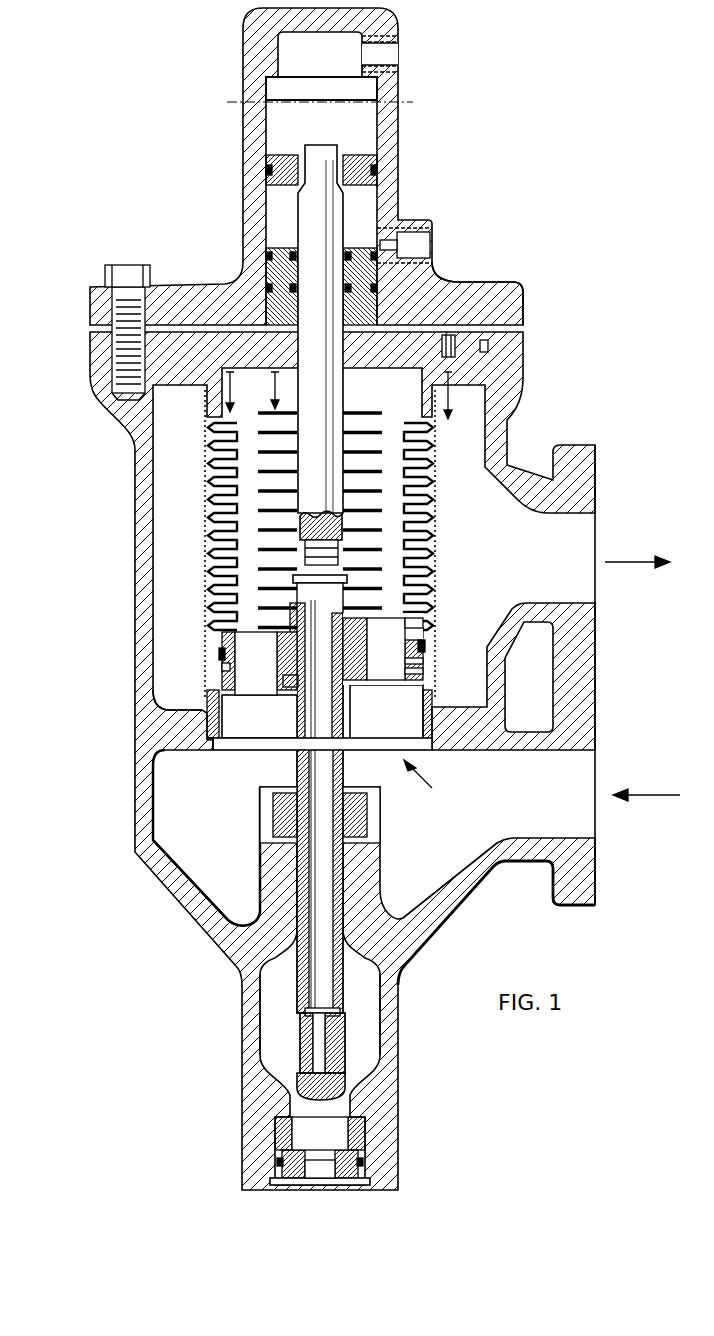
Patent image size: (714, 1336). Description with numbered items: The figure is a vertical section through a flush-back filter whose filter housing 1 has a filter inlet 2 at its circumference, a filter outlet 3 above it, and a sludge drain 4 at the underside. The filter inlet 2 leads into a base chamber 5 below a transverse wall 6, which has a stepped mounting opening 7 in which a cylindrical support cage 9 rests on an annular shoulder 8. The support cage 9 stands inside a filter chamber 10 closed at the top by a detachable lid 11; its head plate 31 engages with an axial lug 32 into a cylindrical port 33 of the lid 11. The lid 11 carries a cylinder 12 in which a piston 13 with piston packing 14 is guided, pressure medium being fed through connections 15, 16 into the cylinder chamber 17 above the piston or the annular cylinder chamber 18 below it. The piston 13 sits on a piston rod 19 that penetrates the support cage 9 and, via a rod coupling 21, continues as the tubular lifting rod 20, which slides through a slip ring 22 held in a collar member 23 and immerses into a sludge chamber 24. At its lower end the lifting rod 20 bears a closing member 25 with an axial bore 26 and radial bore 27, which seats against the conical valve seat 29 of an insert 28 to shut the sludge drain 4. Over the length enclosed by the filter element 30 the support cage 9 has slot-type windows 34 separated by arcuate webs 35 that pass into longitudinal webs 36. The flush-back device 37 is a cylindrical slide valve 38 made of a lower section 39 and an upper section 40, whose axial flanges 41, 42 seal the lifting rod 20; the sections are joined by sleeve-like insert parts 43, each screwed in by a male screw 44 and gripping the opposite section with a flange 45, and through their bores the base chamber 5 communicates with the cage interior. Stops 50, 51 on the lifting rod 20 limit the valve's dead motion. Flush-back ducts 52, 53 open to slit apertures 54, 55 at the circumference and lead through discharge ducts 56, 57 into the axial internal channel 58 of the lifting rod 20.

The filter housing 1 is at (510, 385).
The filter inlet 2 is at (585, 858).
The filter outlet 3 is at (583, 534).
The sludge drain 4 is at (320, 1170).
The base chamber 5 is at (160, 845).
The transverse wall 6 is at (145, 720).
The stepped mounting opening 7 is at (235, 750).
The annular shoulder 8 is at (207, 745).
The support cage 9 is at (208, 695).
The filter chamber 10 is at (153, 548).
The lid 11 is at (90, 308).
The cylinder 12 is at (243, 136).
The piston 13 is at (266, 160).
The piston packing 14 is at (266, 172).
The connection 15 is at (398, 50).
The connection 16 is at (420, 238).
The cylinder chamber 17 is at (372, 126).
The annular cylinder chamber 18 is at (275, 207).
The piston rod 19 is at (320, 232).
The tubular lifting rod 20 is at (300, 888).
The rod coupling 21 is at (320, 530).
The slip ring 22 is at (275, 815).
The collar member 23 is at (265, 858).
The sludge chamber 24 is at (258, 1008).
The closing member 25 is at (300, 1050).
The axial bore 26 is at (340, 1045).
The radial bore 27 is at (300, 1085).
The insert 28 is at (278, 1148).
The conical valve seat 29 is at (360, 1135).
The filter element 30 is at (440, 522).
The head plate 31 is at (485, 338).
The axial lug 32 is at (367, 283).
The cylindrical port 33 is at (380, 305).
The slot-type windows 34 is at (214, 423).
The arcuate webs 35 is at (208, 436).
The longitudinal webs 36 is at (262, 505).
The flush-back device 37 is at (542, 785).
The slide valve 38 is at (425, 650).
The slide valve lower section 39 is at (430, 690).
The slide valve upper section 40 is at (420, 635).
The axial flange 41 is at (350, 702).
The axial flange 42 is at (386, 649).
The insert parts 43 is at (322, 686).
The male screw 44 is at (237, 643).
The flange 45 is at (280, 700).
The stop 50 is at (293, 715).
The stop 51 is at (347, 578).
The flush-back duct 52 is at (423, 660).
The flush-back duct 53 is at (230, 665).
The slit aperture 54 is at (425, 668).
The slit aperture 55 is at (222, 655).
The discharge duct 56 is at (330, 622).
The discharge duct 57 is at (298, 690).
The axial internal channel 58 is at (315, 977).